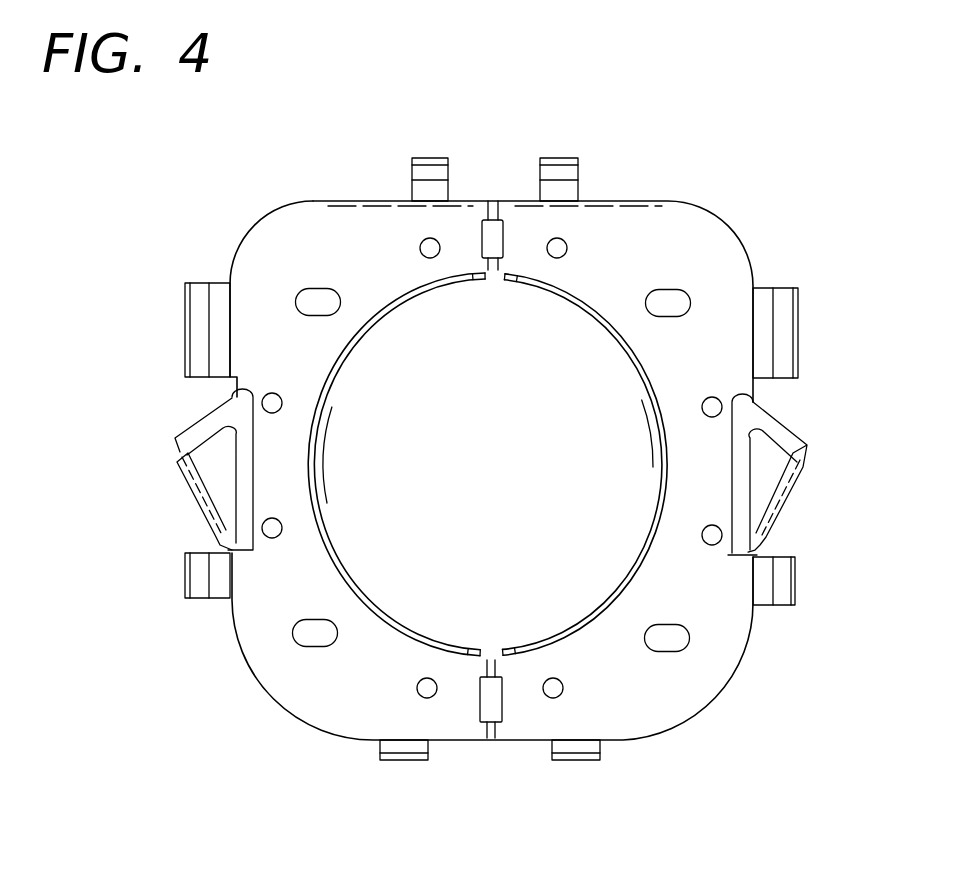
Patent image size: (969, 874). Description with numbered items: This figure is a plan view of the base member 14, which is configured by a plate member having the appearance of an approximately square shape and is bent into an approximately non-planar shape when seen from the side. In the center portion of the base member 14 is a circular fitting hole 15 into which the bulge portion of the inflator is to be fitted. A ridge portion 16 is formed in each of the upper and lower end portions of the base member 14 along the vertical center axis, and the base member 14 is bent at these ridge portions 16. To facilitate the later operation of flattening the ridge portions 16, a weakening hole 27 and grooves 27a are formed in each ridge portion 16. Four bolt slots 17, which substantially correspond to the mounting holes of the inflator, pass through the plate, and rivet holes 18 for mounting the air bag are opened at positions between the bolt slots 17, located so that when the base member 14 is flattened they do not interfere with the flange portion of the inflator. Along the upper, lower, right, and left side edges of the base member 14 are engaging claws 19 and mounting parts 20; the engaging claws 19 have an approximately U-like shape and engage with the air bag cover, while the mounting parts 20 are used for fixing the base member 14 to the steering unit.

The base member 14 is at (295, 203).
The circular fitting hole 15 is at (590, 617).
The ridge portion 16 is at (489, 201).
The bolt slot 17 is at (300, 296).
The rivet hole 18 is at (427, 245).
The engaging claw 19 is at (427, 158).
The mounting part 20 is at (200, 492).
The weakening hole 27 is at (485, 245).
The groove 27a is at (499, 207).